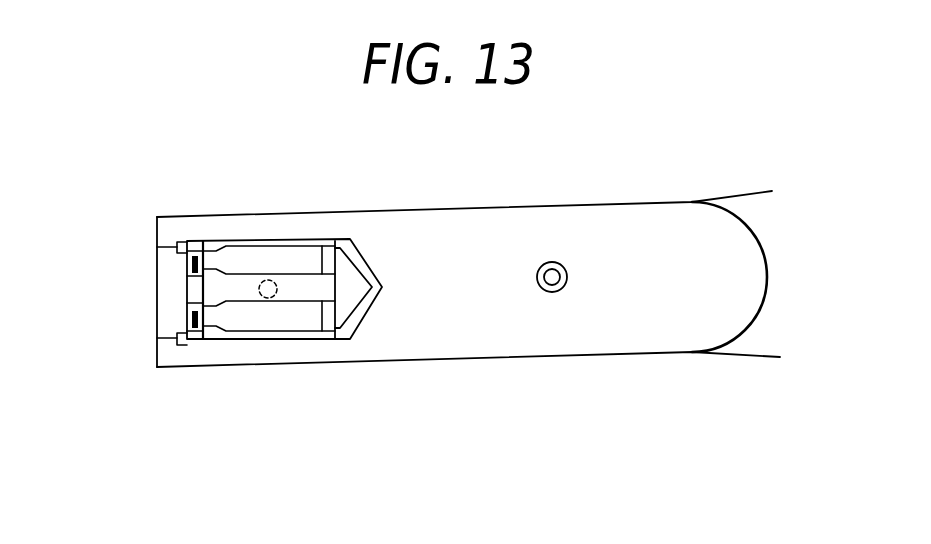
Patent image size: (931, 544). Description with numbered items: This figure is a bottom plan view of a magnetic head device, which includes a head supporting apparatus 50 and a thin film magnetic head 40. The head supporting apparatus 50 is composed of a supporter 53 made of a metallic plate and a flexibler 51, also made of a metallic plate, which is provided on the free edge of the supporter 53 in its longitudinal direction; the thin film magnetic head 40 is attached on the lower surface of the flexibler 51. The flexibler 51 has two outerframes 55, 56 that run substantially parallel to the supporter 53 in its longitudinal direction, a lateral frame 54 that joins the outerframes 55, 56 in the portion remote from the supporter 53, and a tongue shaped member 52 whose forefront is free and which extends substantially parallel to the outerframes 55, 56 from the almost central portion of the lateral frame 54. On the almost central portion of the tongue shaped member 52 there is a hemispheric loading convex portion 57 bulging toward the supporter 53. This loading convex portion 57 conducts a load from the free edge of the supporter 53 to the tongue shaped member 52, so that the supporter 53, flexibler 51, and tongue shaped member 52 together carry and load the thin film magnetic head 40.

The thin film magnetic head 40 is at (336, 311).
The head supporting apparatus 50 is at (419, 306).
The flexibler 51 is at (150, 349).
The tongue shaped member 52 is at (350, 297).
The supporter 53 is at (721, 200).
The lateral frame 54 is at (168, 297).
The outerframe 55 is at (202, 228).
The outerframe 56 is at (323, 350).
The loading convex portion 57 is at (267, 279).